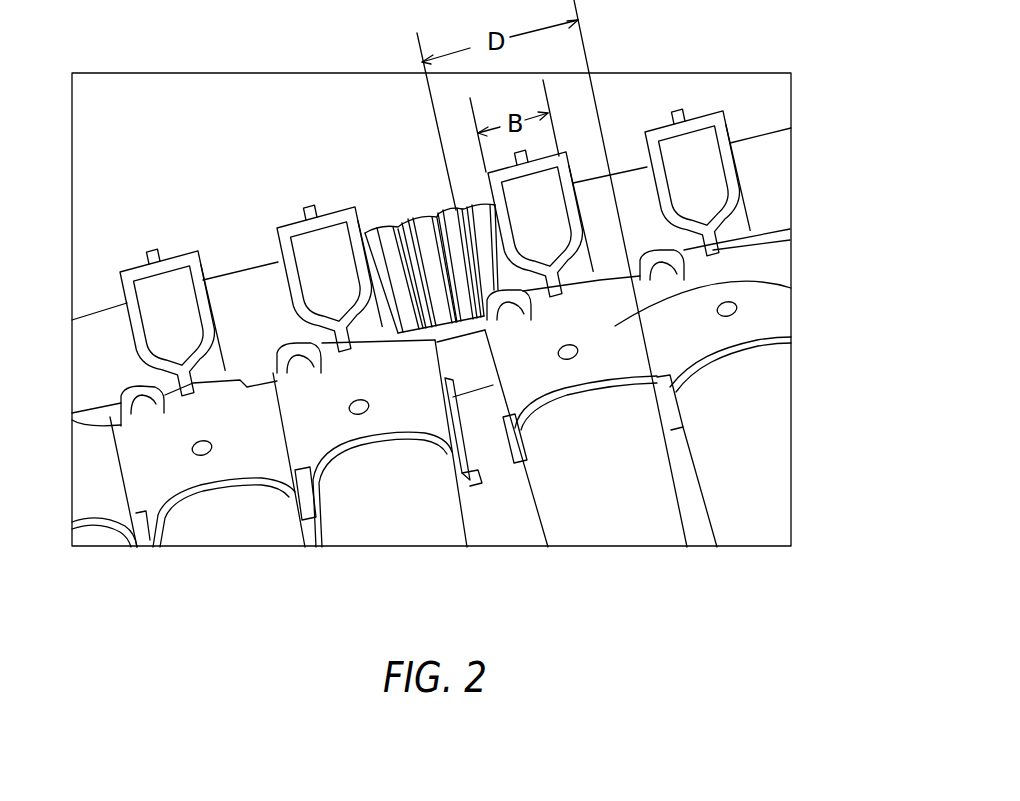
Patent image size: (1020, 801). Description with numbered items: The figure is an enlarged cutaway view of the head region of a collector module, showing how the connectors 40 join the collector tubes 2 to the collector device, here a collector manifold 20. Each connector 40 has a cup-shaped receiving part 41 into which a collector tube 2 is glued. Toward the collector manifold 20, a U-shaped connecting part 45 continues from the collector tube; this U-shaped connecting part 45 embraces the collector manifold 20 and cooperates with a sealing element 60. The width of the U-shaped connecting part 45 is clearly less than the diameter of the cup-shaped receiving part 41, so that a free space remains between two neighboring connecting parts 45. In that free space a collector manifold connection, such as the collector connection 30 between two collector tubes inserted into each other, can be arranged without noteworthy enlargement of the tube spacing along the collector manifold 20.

The collector tube 2 is at (240, 533).
The collector manifold 20 is at (236, 296).
The collector connection 30 is at (428, 210).
The connector 40 is at (792, 237).
The cup-shaped receiving part 41 is at (770, 295).
The U-shaped connecting part 45 is at (733, 157).
The sealing element 60 is at (707, 117).